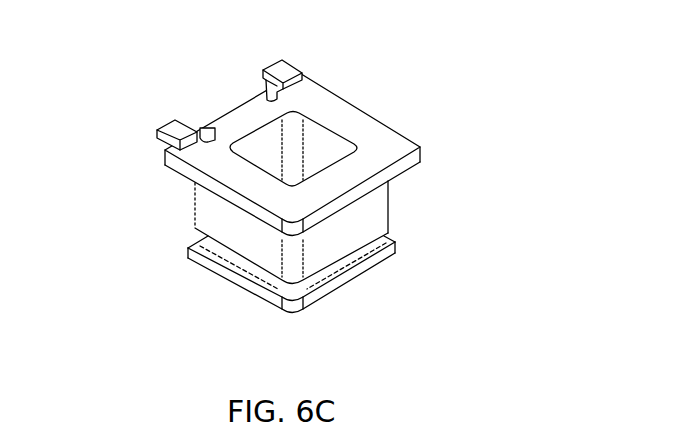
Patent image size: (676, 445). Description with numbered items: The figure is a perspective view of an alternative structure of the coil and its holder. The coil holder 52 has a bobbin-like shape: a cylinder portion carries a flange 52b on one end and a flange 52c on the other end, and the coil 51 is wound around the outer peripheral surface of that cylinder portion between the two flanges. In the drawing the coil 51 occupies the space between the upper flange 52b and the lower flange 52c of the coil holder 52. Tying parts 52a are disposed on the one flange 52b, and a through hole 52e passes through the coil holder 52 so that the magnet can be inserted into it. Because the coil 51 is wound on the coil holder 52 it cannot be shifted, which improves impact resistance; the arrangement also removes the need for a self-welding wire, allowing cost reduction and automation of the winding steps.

The coil 51 is at (230, 220).
The coil holder 52 is at (282, 167).
The tying part 52a is at (160, 143).
The flange 52b is at (393, 150).
The flange 52c is at (400, 244).
The through hole 52e is at (315, 127).